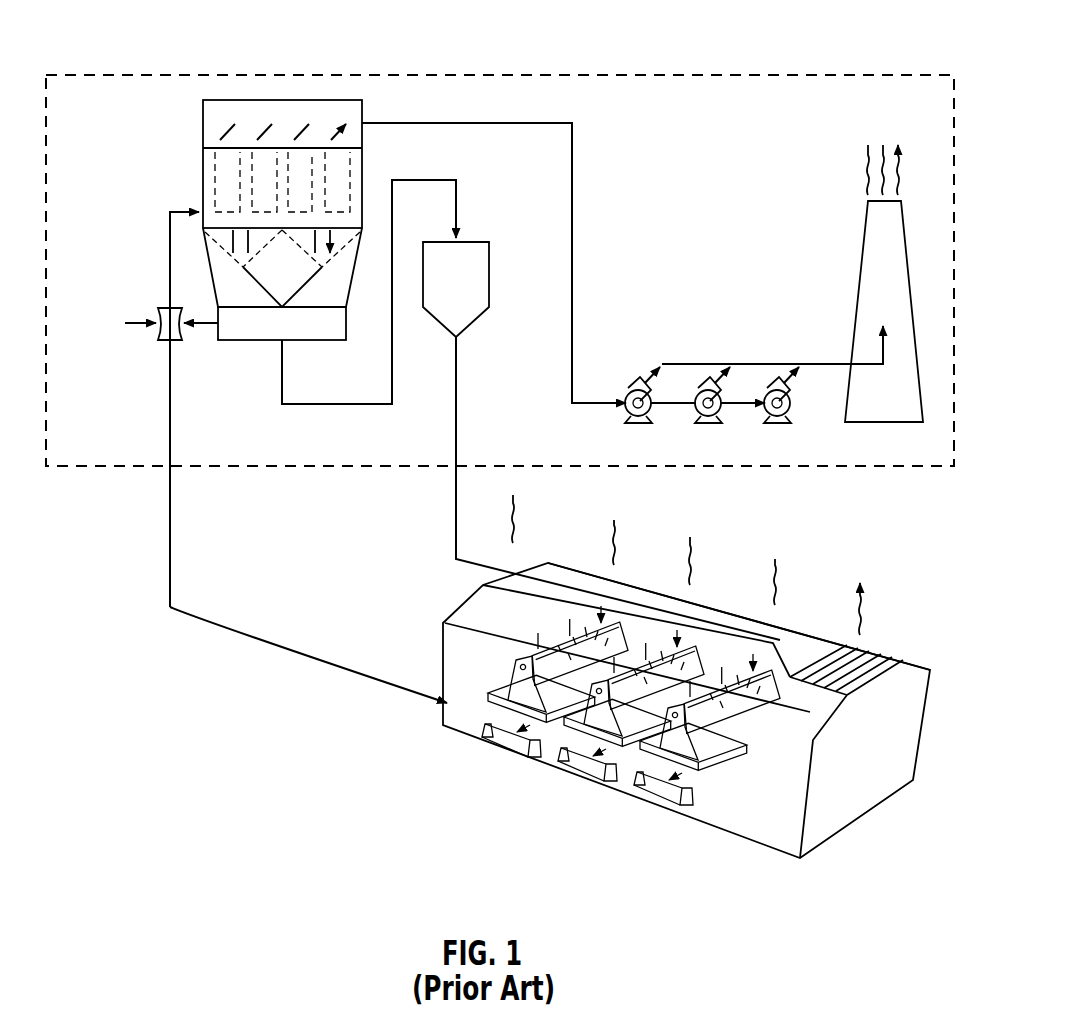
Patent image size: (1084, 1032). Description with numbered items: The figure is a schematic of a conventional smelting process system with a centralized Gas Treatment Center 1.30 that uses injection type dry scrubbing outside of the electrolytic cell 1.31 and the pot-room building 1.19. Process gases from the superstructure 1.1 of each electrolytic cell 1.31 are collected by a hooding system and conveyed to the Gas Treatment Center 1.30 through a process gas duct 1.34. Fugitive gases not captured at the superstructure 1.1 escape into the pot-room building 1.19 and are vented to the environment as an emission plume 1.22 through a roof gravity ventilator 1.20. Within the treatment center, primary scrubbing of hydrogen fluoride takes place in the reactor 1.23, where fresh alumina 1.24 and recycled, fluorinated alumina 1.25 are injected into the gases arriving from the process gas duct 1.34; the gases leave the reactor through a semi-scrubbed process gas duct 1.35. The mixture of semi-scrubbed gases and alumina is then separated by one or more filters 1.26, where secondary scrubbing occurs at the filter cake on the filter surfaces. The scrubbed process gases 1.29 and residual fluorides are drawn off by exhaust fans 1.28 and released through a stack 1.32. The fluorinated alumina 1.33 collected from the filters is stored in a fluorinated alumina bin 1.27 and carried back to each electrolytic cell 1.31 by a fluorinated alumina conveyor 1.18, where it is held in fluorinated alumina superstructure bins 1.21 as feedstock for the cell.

The superstructure 1.1 is at (788, 686).
The fluorinated alumina conveyor 1.18 is at (548, 583).
The pot-room building 1.19 is at (882, 750).
The roof gravity ventilator 1.20 is at (870, 655).
The fluorinated alumina superstructure bins 1.21 is at (755, 735).
The emission plume 1.22 is at (688, 578).
The reactor 1.23 is at (156, 335).
The fresh alumina 1.24 is at (113, 323).
The recycled, fluorinated alumina 1.25 is at (203, 325).
The filters 1.26 is at (213, 172).
The fluorinated alumina bin 1.27 is at (481, 293).
The exhaust fans 1.28 is at (636, 388).
The scrubbed process gases 1.29 is at (865, 178).
The Gas Treatment Center 1.30 is at (758, 75).
The electrolytic cell 1.31 is at (673, 770).
The stack 1.32 is at (883, 425).
The fluorinated alumina 1.33 is at (225, 237).
The process gas duct 1.34 is at (348, 677).
The semi-scrubbed process gas duct 1.35 is at (170, 230).